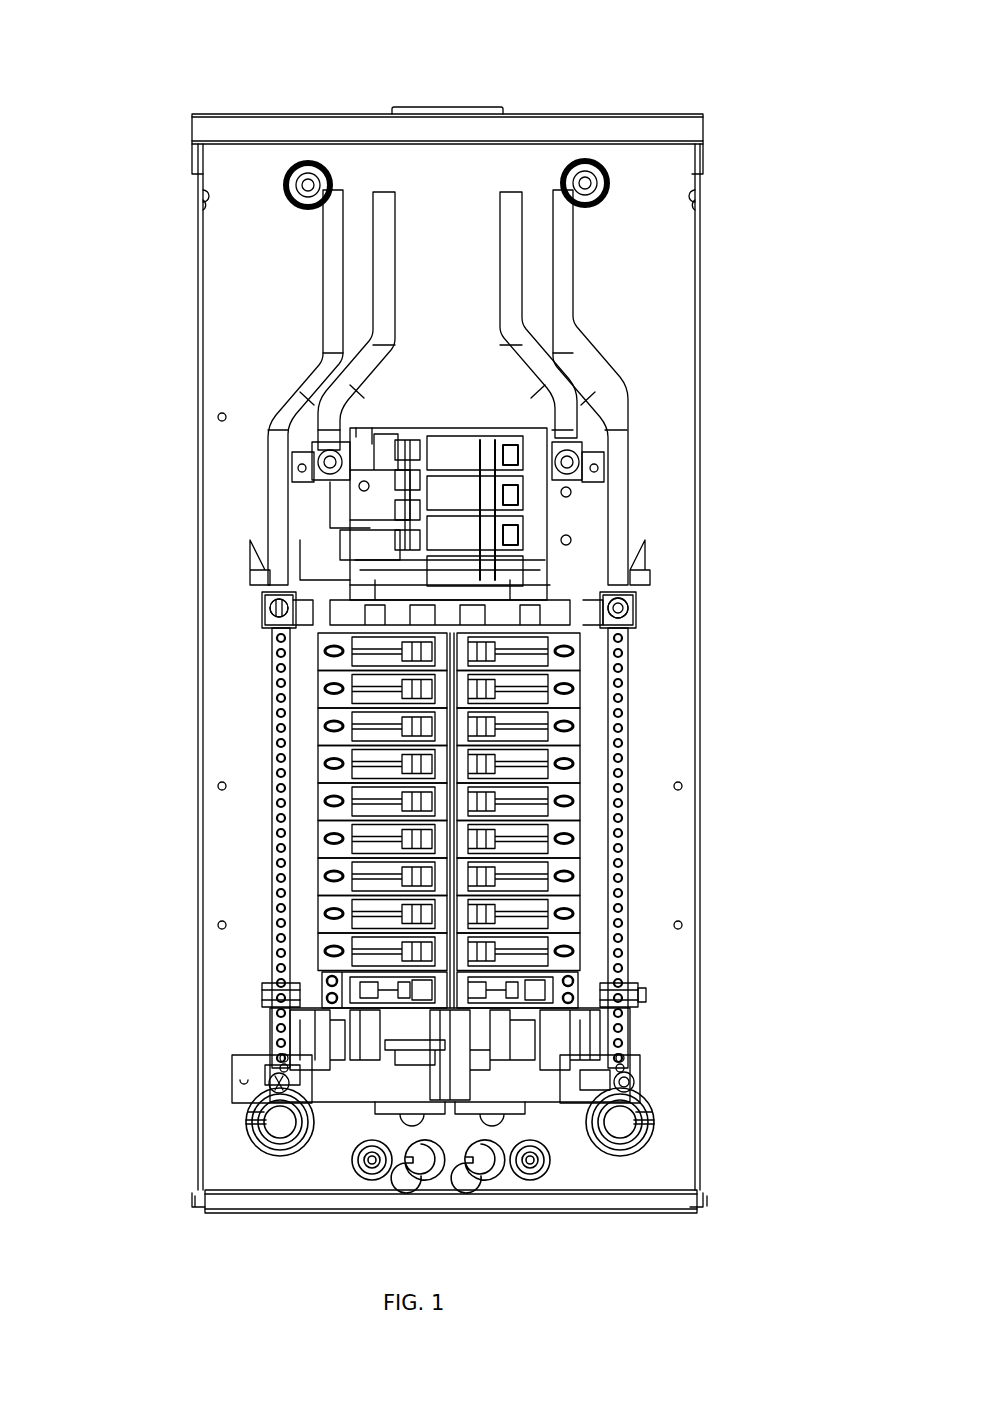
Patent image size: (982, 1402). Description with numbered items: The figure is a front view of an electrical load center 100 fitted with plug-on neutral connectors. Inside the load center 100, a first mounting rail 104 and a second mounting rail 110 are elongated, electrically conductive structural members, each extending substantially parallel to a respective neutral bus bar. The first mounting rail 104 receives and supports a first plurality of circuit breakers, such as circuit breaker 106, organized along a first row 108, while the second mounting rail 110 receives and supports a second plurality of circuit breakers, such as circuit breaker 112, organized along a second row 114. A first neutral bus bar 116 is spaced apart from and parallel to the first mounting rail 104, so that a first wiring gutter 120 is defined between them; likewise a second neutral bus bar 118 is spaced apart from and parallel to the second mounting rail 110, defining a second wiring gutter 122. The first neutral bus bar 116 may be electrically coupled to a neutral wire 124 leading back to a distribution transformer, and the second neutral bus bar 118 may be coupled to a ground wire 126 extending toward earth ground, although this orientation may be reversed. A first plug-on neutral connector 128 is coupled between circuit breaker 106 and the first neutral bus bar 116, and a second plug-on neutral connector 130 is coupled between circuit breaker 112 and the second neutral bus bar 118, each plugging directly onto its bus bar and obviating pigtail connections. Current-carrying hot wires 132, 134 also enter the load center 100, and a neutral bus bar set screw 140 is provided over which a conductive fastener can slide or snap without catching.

The electrical load center 100 is at (180, 70).
The first mounting rail 104 is at (338, 620).
The circuit breaker 106 is at (330, 987).
The first row 108 is at (378, 1015).
The second mounting rail 110 is at (577, 624).
The circuit breaker 112 is at (572, 970).
The second row 114 is at (517, 1015).
The first neutral bus bar 116 is at (266, 660).
The second neutral bus bar 118 is at (628, 665).
The first wiring gutter 120 is at (318, 713).
The second wiring gutter 122 is at (590, 780).
The neutral wire 124 is at (552, 190).
The ground wire 126 is at (335, 190).
The first plug-on neutral connector 128 is at (275, 987).
The second plug-on neutral connector 130 is at (638, 1000).
The hot wire 132 is at (385, 190).
The hot wire 134 is at (510, 190).
The neutral bus bar set screw 140 is at (632, 990).